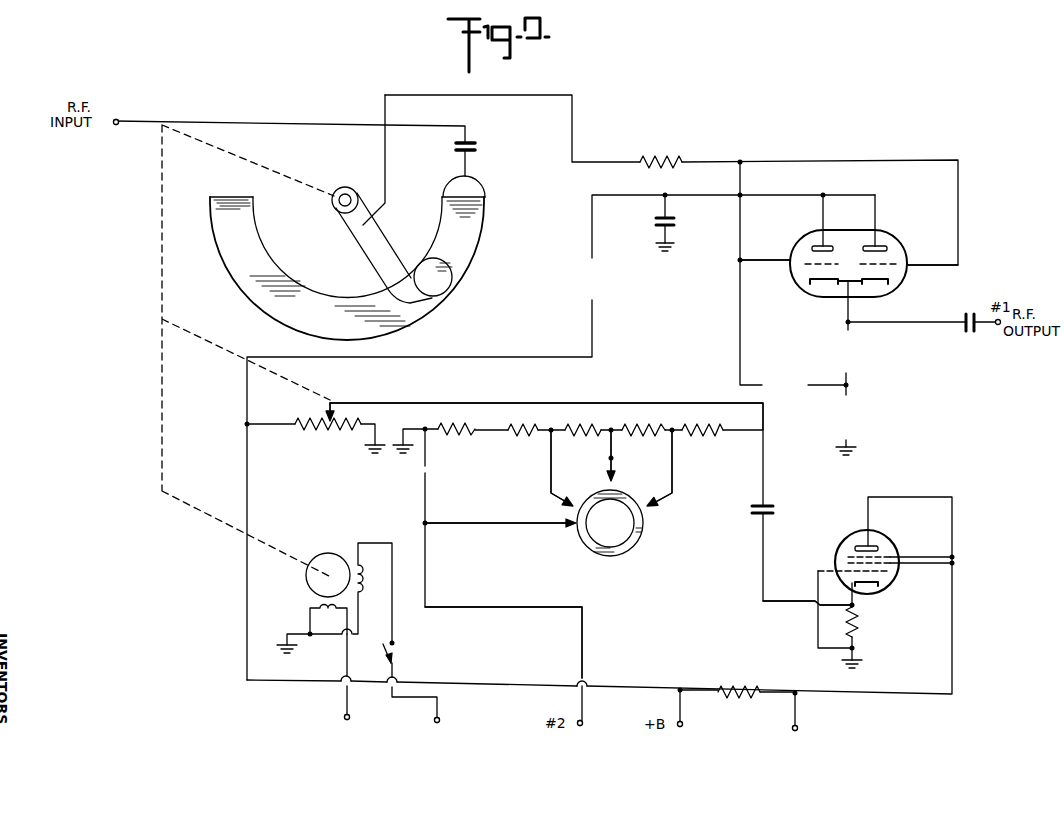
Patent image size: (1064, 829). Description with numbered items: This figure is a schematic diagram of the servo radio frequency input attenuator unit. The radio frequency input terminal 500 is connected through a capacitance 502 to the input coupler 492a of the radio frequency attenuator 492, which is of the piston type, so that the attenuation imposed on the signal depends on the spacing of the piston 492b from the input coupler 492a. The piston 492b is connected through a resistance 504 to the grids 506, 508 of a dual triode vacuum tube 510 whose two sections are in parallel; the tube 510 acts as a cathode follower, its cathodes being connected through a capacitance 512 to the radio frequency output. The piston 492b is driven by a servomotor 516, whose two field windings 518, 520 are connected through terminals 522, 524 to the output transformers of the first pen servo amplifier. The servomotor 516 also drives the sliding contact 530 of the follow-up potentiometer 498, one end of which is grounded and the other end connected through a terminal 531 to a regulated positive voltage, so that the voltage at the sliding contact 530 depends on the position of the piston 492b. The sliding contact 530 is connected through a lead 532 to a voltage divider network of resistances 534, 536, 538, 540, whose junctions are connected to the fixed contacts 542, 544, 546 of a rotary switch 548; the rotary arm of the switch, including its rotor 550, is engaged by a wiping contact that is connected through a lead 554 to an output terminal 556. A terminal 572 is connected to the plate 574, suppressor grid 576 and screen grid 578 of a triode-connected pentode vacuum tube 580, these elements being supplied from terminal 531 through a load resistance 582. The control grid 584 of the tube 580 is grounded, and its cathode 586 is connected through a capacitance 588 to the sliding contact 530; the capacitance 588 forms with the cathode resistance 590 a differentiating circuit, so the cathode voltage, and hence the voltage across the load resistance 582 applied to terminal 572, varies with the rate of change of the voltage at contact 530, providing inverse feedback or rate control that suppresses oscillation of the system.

The radio frequency input terminal 500 is at (118, 119).
The capacitance 502 is at (477, 148).
The input coupler 492a is at (478, 192).
The radio frequency attenuator 492 is at (467, 225).
The piston 492b is at (447, 289).
The resistance 504 is at (677, 130).
The dual triode vacuum tube 510 is at (886, 233).
The grid 508 is at (929, 265).
The grid 506 is at (774, 263).
The capacitance 512 is at (970, 312).
The lead 532 is at (533, 383).
The sliding contact 530 is at (328, 403).
The follow-up potentiometer 498 is at (323, 434).
The resistance 540 is at (536, 437).
The resistance 538 is at (575, 437).
The resistance 536 is at (643, 437).
The resistance 534 is at (692, 438).
The fixed contact 546 is at (560, 496).
The fixed contact 544 is at (613, 470).
The fixed contact 542 is at (660, 503).
The capacitance 588 is at (774, 505).
The triode-connected pentode vacuum tube 580 is at (858, 530).
The plate 574 is at (875, 545).
The suppressor grid 576 is at (907, 556).
The control grid 584 is at (824, 569).
The screen grid 578 is at (905, 566).
The cathode 586 is at (868, 605).
The cathode resistance 590 is at (862, 634).
The servomotor 516 is at (324, 553).
The field winding 520 is at (355, 563).
The field winding 518 is at (316, 608).
The output terminal 556 is at (548, 527).
The rotor of rotary switch 550 is at (598, 553).
The rotary switch 548 is at (632, 558).
The lead 554 is at (583, 635).
The load resistance 582 is at (741, 685).
The terminal 522 is at (348, 722).
The terminal 524 is at (437, 724).
The terminal 531 is at (683, 728).
The terminal 572 is at (797, 732).